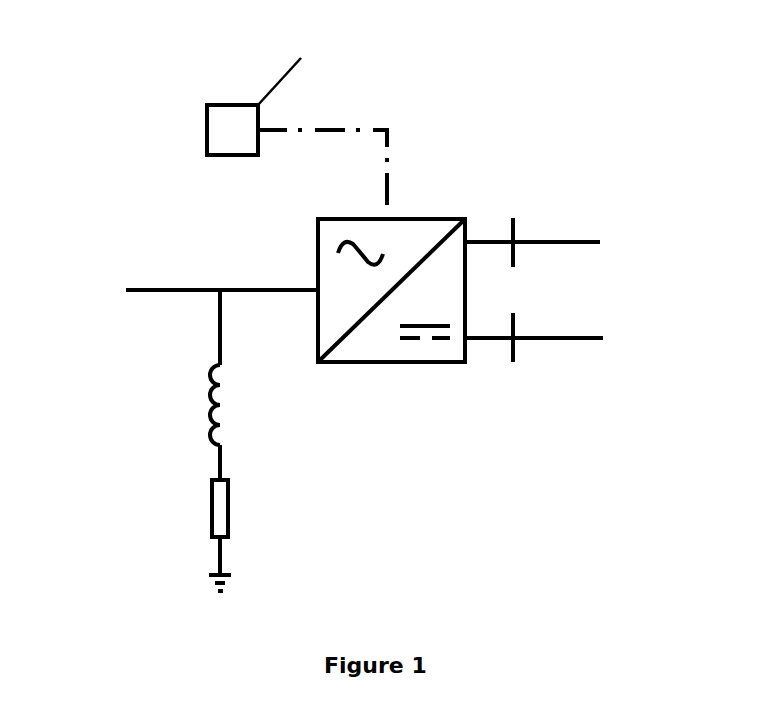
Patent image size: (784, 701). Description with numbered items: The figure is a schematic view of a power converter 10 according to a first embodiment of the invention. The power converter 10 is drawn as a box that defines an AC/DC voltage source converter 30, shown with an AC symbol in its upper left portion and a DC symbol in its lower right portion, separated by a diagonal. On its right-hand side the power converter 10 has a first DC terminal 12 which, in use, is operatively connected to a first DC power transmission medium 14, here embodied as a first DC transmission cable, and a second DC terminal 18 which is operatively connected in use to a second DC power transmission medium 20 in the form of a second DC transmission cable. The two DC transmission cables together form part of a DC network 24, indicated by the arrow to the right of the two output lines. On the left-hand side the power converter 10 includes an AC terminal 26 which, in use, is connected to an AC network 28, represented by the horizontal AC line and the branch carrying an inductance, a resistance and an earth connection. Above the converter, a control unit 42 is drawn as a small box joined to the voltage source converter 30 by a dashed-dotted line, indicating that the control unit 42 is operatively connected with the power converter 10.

The power converter 10 is at (113, 160).
The first DC terminal 12 is at (468, 237).
The first DC power transmission medium 14 is at (573, 241).
The second DC terminal 18 is at (468, 342).
The second DC power transmission medium 20 is at (585, 342).
The DC network 24 is at (628, 299).
The AC terminal 26 is at (315, 288).
The AC network 28 is at (138, 270).
The AC/DC voltage source converter 30 is at (382, 345).
The control unit 42 is at (240, 120).